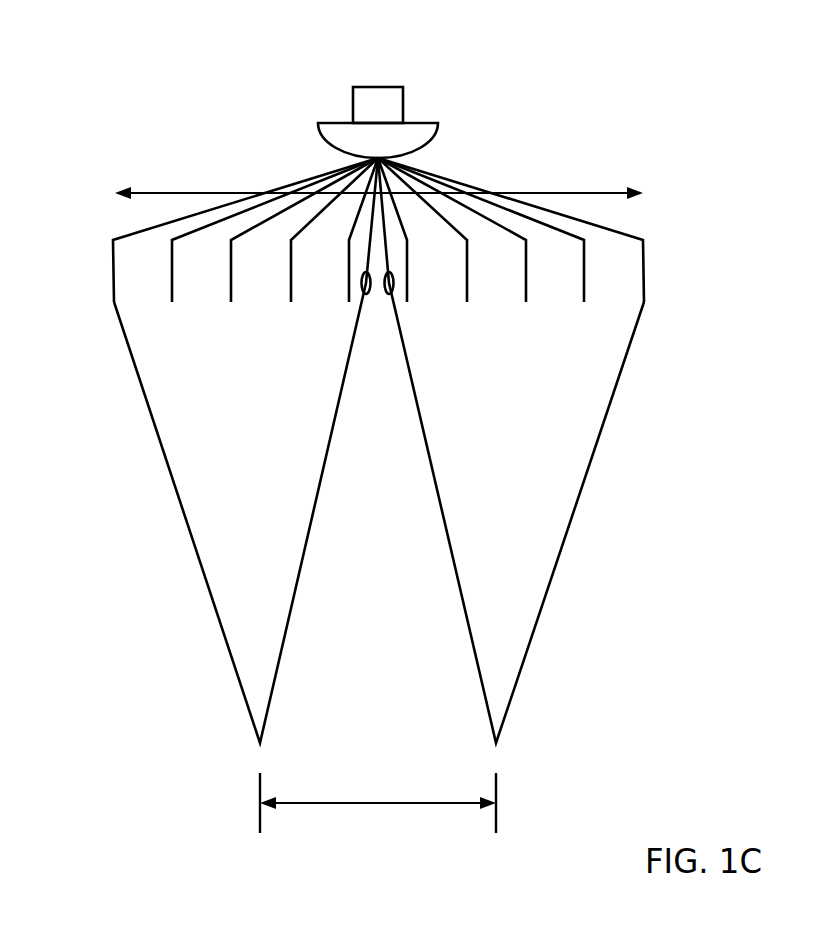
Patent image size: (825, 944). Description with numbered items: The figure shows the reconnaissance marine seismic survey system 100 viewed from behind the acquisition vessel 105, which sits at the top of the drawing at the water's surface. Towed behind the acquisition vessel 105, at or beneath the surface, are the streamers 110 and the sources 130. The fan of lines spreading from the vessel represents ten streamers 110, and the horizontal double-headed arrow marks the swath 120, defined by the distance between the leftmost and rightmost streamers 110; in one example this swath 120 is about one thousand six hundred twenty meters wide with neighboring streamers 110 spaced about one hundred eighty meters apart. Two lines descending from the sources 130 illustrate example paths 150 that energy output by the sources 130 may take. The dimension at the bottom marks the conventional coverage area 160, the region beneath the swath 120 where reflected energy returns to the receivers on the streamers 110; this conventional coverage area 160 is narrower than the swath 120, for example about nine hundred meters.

The system 100 is at (677, 97).
The acquisition vessel 105 is at (379, 87).
The streamers 110 is at (646, 265).
The swath 120 is at (603, 193).
The sources 130 is at (391, 292).
The paths 150 is at (455, 589).
The conventional coverage area 160 is at (388, 803).